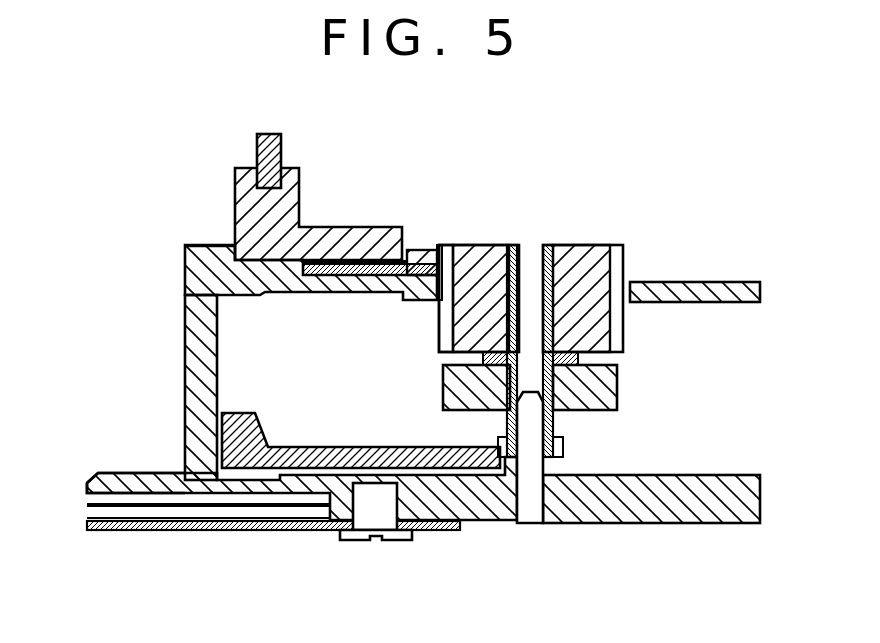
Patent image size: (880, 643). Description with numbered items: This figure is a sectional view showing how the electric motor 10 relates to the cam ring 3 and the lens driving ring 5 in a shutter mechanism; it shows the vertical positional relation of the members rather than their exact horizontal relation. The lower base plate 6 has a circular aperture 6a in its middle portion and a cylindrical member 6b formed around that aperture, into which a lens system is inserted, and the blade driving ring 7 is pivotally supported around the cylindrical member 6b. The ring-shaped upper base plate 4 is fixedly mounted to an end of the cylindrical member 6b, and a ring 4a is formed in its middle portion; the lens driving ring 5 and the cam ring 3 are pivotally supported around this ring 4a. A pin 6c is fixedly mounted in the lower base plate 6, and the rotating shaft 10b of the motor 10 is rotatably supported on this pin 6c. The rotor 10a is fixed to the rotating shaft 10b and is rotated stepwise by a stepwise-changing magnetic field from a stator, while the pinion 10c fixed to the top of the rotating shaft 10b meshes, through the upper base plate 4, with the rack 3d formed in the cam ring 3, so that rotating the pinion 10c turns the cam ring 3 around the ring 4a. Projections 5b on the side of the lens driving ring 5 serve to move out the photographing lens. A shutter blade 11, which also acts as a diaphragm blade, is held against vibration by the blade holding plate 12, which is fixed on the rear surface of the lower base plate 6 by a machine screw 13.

The cam ring 3 is at (417, 249).
The rack 3d is at (447, 244).
The upper base plate 4 is at (184, 263).
The ring 4a is at (212, 245).
The lens driving ring 5 is at (313, 226).
The projections 5b is at (283, 150).
The lower base plate 6 is at (670, 475).
The circular aperture 6a is at (97, 472).
The cylindrical member 6b is at (183, 441).
The pin 6c is at (526, 524).
The blade driving ring 7 is at (330, 448).
The electric motor 10 is at (633, 367).
The rotor 10a is at (443, 380).
The rotating shaft 10b is at (548, 244).
The pinion 10c is at (570, 244).
The shutter blade 11 is at (85, 508).
The blade holding plate 12 is at (212, 532).
The machine screw 13 is at (387, 541).